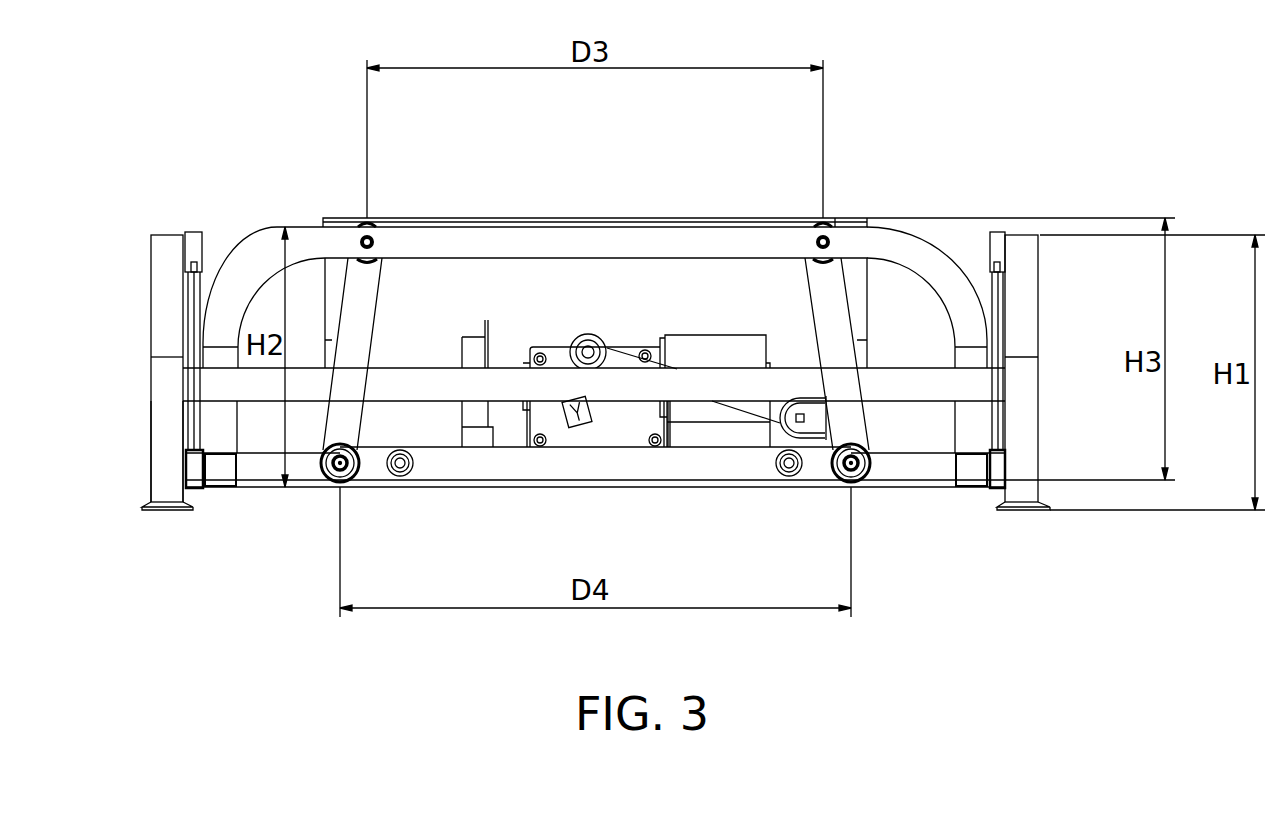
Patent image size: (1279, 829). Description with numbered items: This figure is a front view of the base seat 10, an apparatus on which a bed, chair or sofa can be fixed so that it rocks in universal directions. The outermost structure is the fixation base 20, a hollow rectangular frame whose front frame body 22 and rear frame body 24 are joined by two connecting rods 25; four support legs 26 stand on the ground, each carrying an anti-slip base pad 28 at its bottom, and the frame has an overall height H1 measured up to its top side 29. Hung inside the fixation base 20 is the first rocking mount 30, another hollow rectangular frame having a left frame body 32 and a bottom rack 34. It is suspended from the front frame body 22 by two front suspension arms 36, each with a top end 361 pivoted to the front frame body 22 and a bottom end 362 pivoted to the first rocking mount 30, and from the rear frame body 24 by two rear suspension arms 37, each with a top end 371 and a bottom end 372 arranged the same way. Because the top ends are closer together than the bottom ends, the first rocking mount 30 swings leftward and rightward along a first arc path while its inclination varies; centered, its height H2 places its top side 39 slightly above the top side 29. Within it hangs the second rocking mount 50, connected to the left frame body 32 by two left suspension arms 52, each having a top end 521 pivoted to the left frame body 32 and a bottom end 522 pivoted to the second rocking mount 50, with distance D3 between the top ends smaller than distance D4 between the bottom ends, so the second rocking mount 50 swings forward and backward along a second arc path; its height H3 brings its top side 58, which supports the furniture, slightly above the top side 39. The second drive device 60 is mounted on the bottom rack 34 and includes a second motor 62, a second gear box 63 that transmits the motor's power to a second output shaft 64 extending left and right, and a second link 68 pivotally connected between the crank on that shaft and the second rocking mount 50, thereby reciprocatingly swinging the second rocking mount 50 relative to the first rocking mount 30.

The base seat 10 is at (243, 115).
The fixation base 20 is at (160, 240).
The front frame body 22 is at (160, 393).
The rear frame body 24 is at (1020, 487).
The connecting rods 25 is at (216, 388).
The support legs 26 is at (157, 475).
The base pad 28 is at (142, 508).
The top side 29 is at (1020, 238).
The first rocking mount 30 is at (919, 215).
The left frame body 32 is at (485, 238).
The bottom rack 34 is at (306, 476).
The front suspension arms 36 is at (190, 318).
The top end 361 is at (195, 234).
The bottom end 362 is at (202, 488).
The rear suspension arms 37 is at (1003, 313).
The top end 371 is at (993, 242).
The bottom end 372 is at (997, 488).
The top side 39 is at (520, 219).
The second rocking mount 50 is at (742, 206).
The left suspension arms 52 is at (365, 300).
The top end 521 is at (365, 238).
The bottom end 522 is at (355, 470).
The top side 58 is at (657, 218).
The second drive device 60 is at (636, 321).
The second motor 62 is at (703, 335).
The second gear box 63 is at (562, 348).
The second output shaft 64 is at (577, 424).
The second link 68 is at (755, 408).